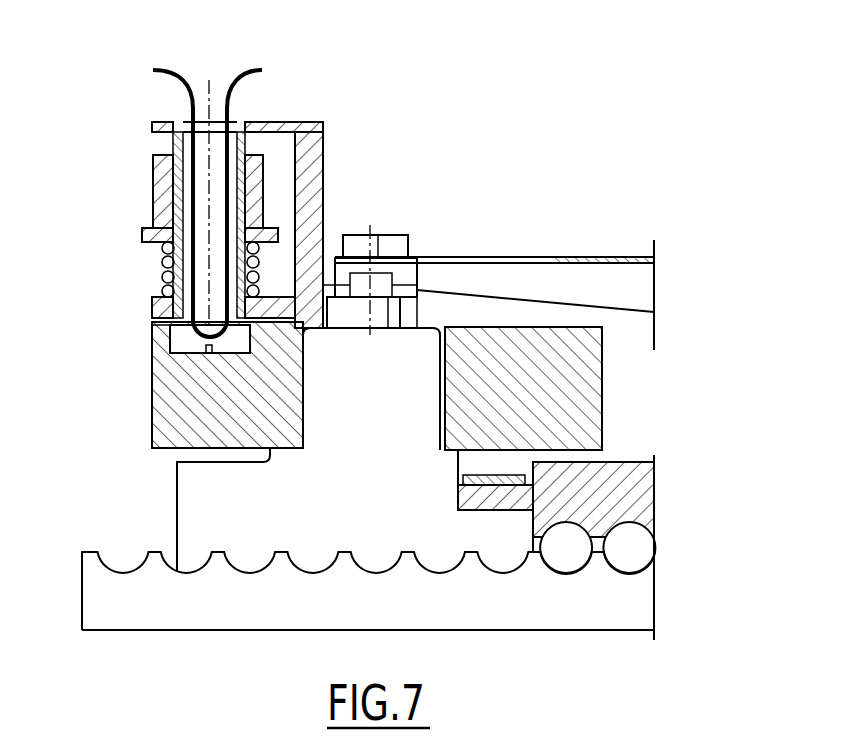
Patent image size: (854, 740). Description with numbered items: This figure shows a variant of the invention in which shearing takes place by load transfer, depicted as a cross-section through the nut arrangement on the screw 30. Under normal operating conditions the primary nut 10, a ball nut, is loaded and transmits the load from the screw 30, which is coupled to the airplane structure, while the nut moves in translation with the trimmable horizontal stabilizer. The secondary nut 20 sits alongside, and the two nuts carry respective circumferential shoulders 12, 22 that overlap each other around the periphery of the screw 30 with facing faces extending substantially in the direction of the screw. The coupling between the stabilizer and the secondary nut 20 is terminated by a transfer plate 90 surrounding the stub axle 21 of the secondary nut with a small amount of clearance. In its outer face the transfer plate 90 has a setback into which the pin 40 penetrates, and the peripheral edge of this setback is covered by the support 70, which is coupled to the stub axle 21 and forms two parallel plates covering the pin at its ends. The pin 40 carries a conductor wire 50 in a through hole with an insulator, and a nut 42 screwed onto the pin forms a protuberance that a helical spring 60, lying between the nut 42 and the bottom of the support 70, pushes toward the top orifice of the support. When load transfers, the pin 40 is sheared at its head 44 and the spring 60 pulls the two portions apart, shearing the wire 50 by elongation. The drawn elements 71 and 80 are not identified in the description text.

The guide block 10 is at (587, 492).
The bracket 12 is at (495, 493).
The slider body 20 is at (355, 505).
The carriage 21 is at (410, 368).
The slider foot 22 is at (500, 537).
The guide rail 30 is at (203, 593).
The housing 40 is at (163, 193).
The cover plate 42 is at (145, 152).
The bottom plate 44 is at (183, 335).
The cable 50 is at (257, 82).
The spring 60 is at (163, 257).
The outer housing wall 70 is at (315, 149).
The bolt 71 is at (383, 282).
The flange 80 is at (148, 236).
The base block 90 is at (190, 405).